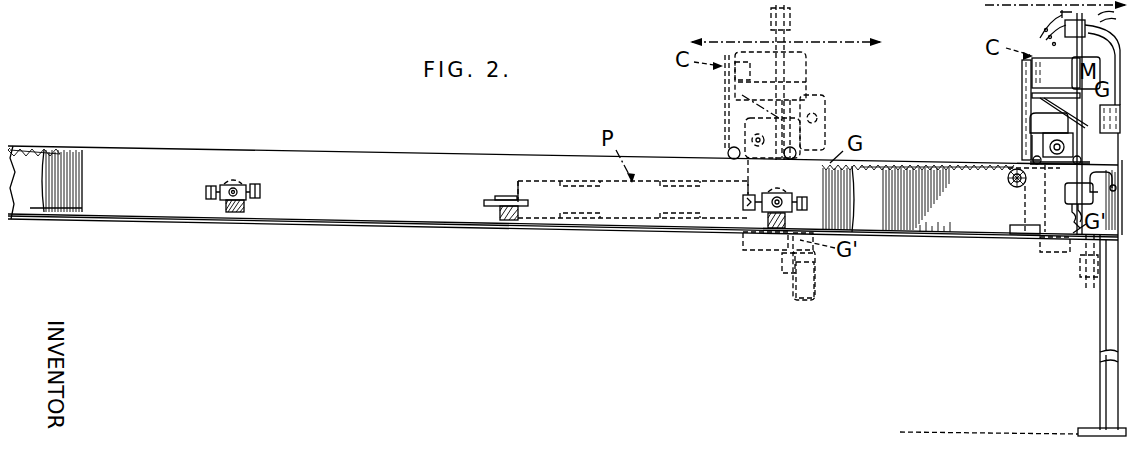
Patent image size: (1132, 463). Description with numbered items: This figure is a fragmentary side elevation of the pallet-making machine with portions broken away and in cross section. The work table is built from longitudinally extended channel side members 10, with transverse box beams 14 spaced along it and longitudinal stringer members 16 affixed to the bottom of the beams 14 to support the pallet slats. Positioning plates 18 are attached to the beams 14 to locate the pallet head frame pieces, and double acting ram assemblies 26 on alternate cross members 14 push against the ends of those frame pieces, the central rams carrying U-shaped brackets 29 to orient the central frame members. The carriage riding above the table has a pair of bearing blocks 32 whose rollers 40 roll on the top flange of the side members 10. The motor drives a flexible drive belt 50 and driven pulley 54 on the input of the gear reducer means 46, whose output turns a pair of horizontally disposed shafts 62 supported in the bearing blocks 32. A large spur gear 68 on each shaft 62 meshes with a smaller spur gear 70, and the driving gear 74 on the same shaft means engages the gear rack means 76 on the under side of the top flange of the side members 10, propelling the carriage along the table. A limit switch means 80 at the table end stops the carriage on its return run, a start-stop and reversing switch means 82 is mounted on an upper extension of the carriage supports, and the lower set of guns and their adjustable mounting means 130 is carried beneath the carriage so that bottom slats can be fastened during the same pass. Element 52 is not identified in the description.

The side member 10 is at (72, 174).
The box beam 14 is at (248, 208).
The stringer member 16 is at (384, 224).
The positioning plate 18 is at (492, 200).
The ram assembly 26 is at (233, 184).
The U-shaped bracket 29 is at (207, 186).
The bearing block 32 is at (1050, 135).
The roller 40 is at (1030, 163).
The gear reducer means 46 is at (1087, 125).
The flexible drive belt 50 is at (1022, 63).
The bar 52 is at (1032, 96).
The driven pulley 54 is at (1027, 137).
The horizontally disposed shaft 62 is at (1050, 148).
The spur gear 68 is at (1030, 6).
The spur gear 70 is at (1022, 190).
The driving gear 74 is at (1008, 184).
The gear rack means 76 is at (38, 182).
The limit switch means 80 is at (1090, 200).
The start-stop and reversing switch means 82 is at (1072, 32).
The lower set of guns and adjustable mounting means 130 is at (816, 271).